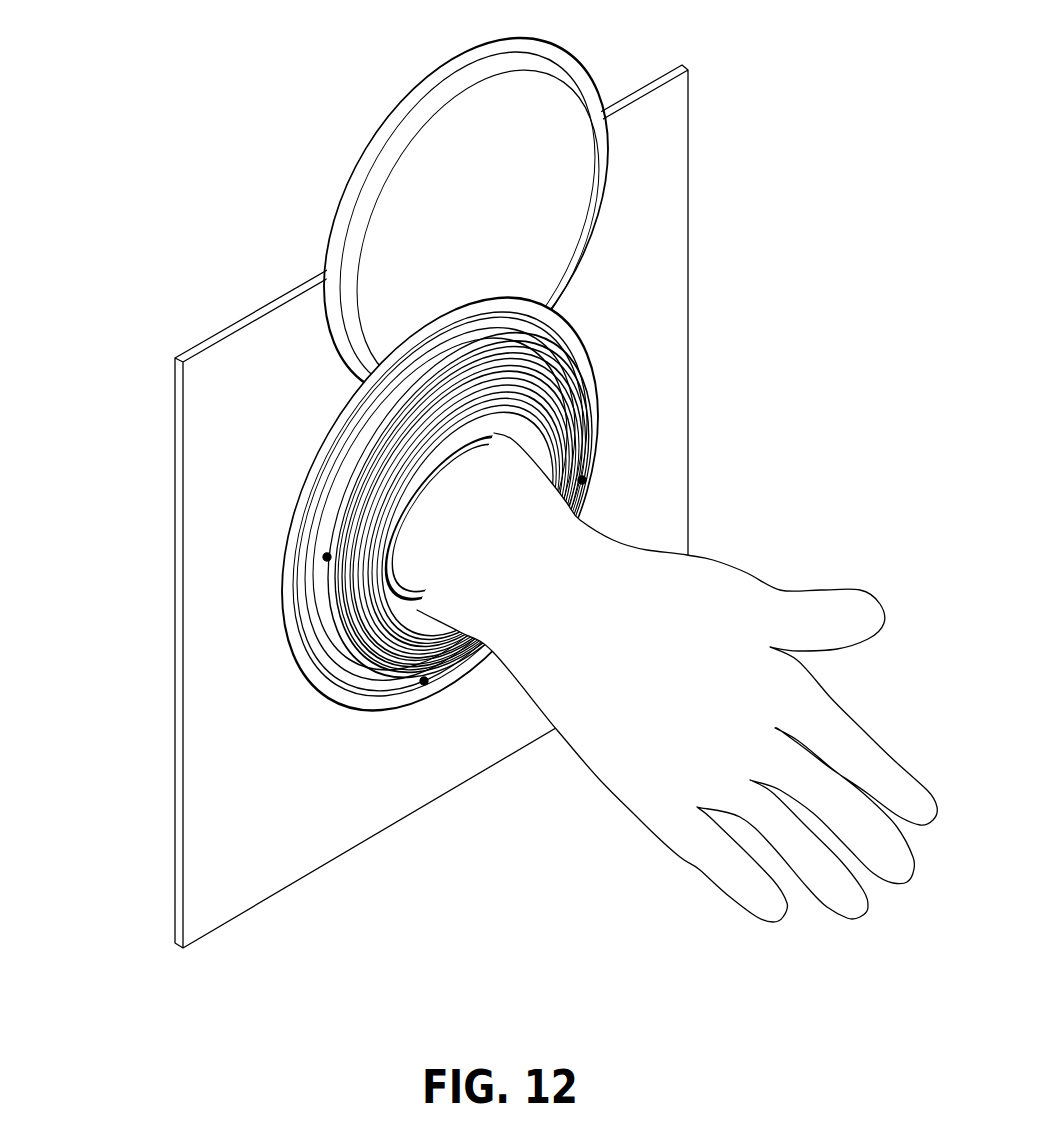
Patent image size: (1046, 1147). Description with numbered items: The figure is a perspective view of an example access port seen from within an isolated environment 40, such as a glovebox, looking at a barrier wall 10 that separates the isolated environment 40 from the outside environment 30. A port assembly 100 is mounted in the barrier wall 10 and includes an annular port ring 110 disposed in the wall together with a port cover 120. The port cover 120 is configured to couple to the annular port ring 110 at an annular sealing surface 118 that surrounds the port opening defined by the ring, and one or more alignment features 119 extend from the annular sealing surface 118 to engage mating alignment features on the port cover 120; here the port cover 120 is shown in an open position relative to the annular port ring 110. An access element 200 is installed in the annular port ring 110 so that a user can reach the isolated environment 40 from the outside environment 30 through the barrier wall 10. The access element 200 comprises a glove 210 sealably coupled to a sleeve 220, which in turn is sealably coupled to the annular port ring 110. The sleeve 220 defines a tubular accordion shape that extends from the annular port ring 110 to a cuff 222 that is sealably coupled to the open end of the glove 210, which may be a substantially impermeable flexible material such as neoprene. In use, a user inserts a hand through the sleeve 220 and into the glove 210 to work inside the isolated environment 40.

The barrier wall 10 is at (667, 200).
The outside environment 30 is at (113, 842).
The isolated environment 40 is at (317, 926).
The port assembly 100 is at (491, 509).
The annular port ring 110 is at (303, 667).
The annular sealing surface 118 is at (357, 680).
The alignment features 119 is at (325, 557).
The port cover 120 is at (557, 92).
The access element 200 is at (632, 593).
The glove 210 is at (610, 760).
The sleeve 220 is at (520, 393).
The cuff 222 is at (450, 457).